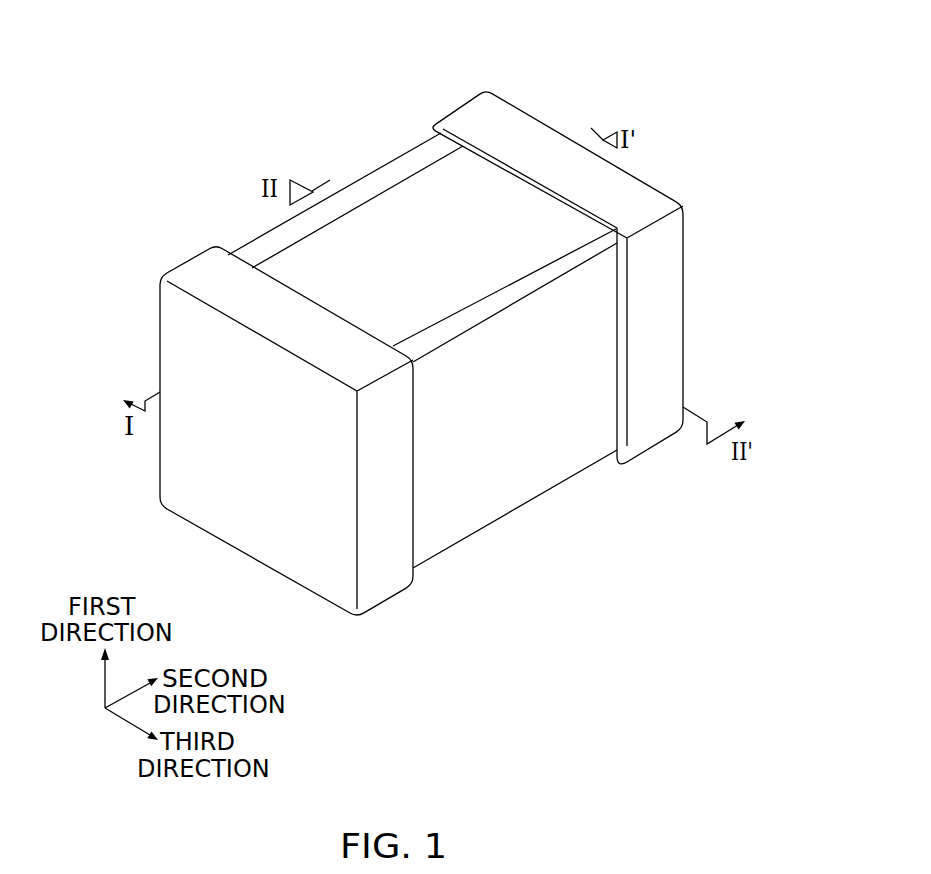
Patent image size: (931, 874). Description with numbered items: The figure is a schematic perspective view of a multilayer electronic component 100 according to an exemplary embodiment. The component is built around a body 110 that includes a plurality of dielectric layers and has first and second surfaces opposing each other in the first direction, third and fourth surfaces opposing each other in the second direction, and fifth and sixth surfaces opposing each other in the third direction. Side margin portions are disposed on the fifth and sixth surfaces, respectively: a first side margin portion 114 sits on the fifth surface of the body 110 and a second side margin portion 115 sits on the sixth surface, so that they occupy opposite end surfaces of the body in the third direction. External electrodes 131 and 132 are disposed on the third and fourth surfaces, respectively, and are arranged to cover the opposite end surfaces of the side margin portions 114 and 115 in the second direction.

The multilayer electronic component 100 is at (280, 37).
The body 110 is at (422, 327).
The first side margin portion 114 is at (354, 190).
The second side margin portion 115 is at (528, 475).
The external electrode 131 is at (197, 265).
The external electrode 132 is at (474, 100).